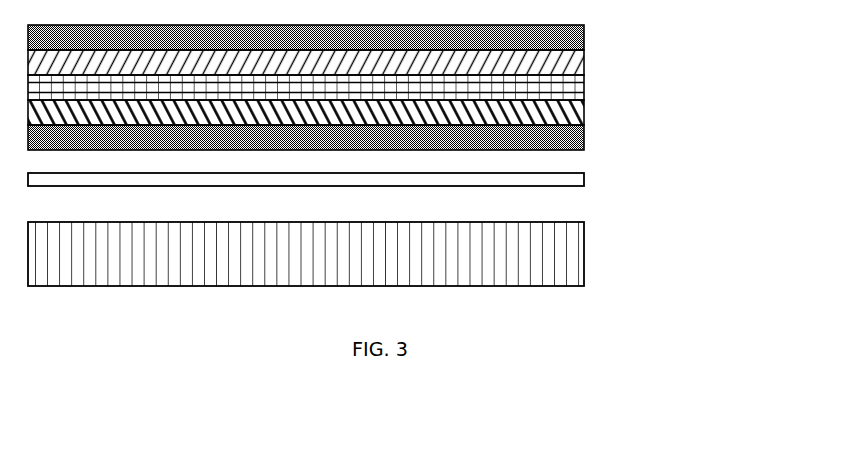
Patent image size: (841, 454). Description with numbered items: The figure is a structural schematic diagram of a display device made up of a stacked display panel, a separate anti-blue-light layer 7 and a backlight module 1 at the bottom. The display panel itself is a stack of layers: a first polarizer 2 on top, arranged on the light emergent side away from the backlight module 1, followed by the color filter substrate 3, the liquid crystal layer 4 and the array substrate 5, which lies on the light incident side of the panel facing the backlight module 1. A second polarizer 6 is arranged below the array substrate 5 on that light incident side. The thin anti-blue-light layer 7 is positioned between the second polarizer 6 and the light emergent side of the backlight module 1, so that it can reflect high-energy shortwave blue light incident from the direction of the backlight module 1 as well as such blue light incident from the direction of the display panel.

The backlight module 1 is at (497, 259).
The first polarizer 2 is at (484, 38).
The color filter substrate 3 is at (484, 63).
The liquid crystal layer 4 is at (484, 87).
The array substrate 5 is at (484, 112).
The second polarizer 6 is at (484, 137).
The anti-blue-light layer 7 is at (484, 180).